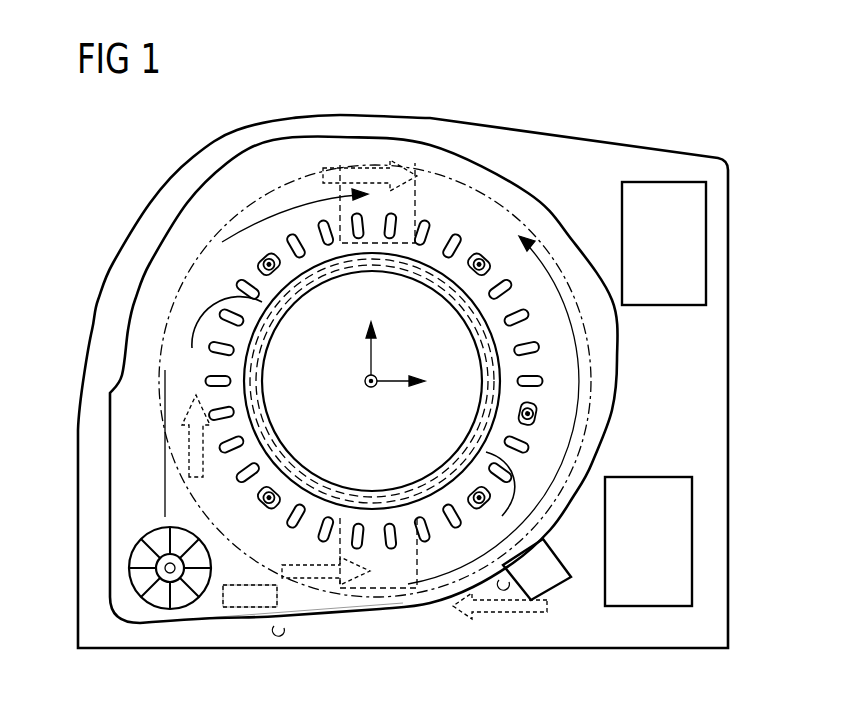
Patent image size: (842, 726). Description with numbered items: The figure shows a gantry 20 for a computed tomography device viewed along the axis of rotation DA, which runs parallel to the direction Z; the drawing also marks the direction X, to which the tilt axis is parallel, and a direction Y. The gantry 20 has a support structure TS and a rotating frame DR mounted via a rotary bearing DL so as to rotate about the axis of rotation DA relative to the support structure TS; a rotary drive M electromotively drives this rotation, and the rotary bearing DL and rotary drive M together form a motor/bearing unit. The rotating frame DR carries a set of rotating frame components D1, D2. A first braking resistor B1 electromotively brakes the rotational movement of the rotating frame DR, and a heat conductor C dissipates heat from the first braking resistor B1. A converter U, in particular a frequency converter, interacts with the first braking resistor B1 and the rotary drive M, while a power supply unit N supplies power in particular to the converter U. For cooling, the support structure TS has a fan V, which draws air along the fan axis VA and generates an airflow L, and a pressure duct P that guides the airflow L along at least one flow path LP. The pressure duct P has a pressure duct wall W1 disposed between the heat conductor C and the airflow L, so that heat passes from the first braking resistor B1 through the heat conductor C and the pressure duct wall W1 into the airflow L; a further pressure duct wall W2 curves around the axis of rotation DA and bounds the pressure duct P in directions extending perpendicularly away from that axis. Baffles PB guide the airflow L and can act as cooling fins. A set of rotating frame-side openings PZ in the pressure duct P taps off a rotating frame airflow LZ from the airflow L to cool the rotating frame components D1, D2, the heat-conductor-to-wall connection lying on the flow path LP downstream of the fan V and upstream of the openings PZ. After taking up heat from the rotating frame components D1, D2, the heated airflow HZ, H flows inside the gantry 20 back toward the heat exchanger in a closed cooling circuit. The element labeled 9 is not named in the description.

The gantry 20 is at (607, 142).
The support structure TS is at (528, 193).
The flow path LP is at (553, 268).
The rotary drive M is at (372, 381).
The rotary bearing DL is at (437, 270).
The rotor 9 is at (474, 397).
The direction Z is at (336, 387).
The axis of rotation DA is at (348, 387).
The Y axis Y is at (362, 347).
The direction X is at (401, 397).
The set of rotating frame-side openings PZ is at (250, 292).
The rotating frame airflow LZ is at (275, 256).
The baffle PB is at (200, 325).
The pressure duct P is at (182, 374).
The rotating frame DR is at (313, 170).
The rotating frame component D1 is at (388, 167).
The rotating frame component D2 is at (383, 590).
The airflow L is at (190, 440).
The fan V is at (140, 553).
The fan axis VA is at (170, 573).
The pressure duct wall W1 is at (228, 560).
The pressure duct wall W2 is at (530, 412).
The first braking resistor B1 is at (250, 608).
The heat conductor C is at (237, 608).
The heated airflow HZ is at (277, 637).
The heated airflow H is at (510, 614).
The converter U is at (553, 598).
The power supply unit N is at (693, 537).